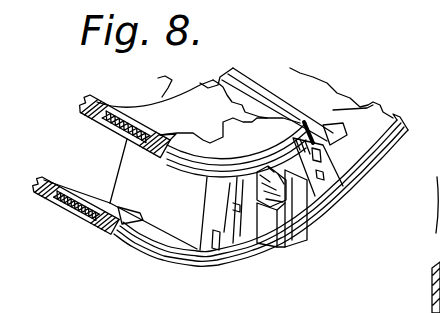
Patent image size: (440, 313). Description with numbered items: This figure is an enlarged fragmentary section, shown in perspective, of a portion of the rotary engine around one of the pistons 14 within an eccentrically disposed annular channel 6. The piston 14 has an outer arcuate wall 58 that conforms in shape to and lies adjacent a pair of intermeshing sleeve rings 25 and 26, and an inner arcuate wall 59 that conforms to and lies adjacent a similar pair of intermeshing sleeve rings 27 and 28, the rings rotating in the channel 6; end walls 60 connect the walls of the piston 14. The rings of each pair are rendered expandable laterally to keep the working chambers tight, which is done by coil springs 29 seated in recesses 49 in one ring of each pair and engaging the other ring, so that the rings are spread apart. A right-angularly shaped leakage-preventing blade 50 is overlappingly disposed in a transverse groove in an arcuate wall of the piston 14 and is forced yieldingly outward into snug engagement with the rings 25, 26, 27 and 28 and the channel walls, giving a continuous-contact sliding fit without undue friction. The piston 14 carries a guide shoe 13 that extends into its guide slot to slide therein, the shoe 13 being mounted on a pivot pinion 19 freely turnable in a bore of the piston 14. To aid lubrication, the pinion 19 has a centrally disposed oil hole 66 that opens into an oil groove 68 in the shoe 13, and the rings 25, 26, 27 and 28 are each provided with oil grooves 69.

The annular channel 6 is at (78, 130).
The guide shoe 13 is at (298, 233).
The piston 14 is at (300, 193).
The pivot pinion 19 is at (243, 234).
The sleeve ring 25 is at (113, 238).
The sleeve ring 26 is at (50, 206).
The sleeve ring 27 is at (190, 106).
The sleeve ring 28 is at (193, 173).
The coil spring 29 is at (72, 208).
The recess 49 is at (93, 214).
The leakage-preventing blade 50 is at (372, 172).
The outer arcuate wall 58 is at (257, 250).
The inner arcuate wall 59 is at (343, 146).
The end wall 60 is at (262, 84).
The oil hole 66 is at (305, 210).
The oil groove 68 is at (288, 238).
The oil groove 69 is at (90, 100).